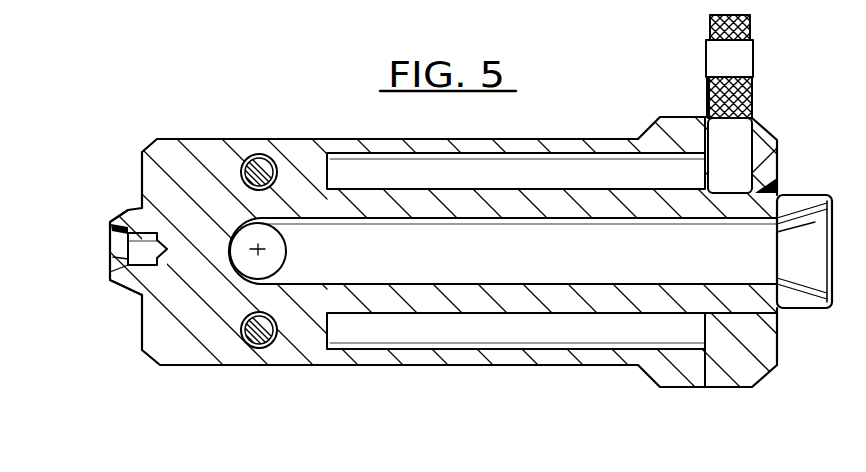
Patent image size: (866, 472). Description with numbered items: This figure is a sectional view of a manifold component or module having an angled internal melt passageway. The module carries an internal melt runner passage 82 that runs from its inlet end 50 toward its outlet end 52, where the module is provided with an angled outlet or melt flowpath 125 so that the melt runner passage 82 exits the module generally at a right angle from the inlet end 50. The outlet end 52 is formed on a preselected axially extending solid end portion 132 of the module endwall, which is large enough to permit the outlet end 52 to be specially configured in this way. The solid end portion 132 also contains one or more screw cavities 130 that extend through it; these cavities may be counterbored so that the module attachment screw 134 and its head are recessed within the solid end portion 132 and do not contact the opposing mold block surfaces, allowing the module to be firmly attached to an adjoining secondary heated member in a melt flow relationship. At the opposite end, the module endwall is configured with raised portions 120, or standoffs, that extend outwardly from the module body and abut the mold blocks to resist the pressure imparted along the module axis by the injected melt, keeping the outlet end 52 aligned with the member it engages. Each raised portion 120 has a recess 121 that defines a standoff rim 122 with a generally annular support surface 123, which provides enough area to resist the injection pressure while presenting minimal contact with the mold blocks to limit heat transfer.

The inlet end 50 is at (793, 220).
The outlet end 52 is at (459, 247).
The internal melt runner passage 82 is at (656, 264).
The raised portions 120 is at (140, 228).
The recess 121 is at (132, 247).
The standoff rim 122 is at (110, 282).
The annular support surface 123 is at (117, 223).
The angled outlet 125 is at (264, 249).
The screw cavities 130 is at (249, 157).
The solid end portion 132 is at (233, 348).
The module attachment screw 134 is at (268, 156).